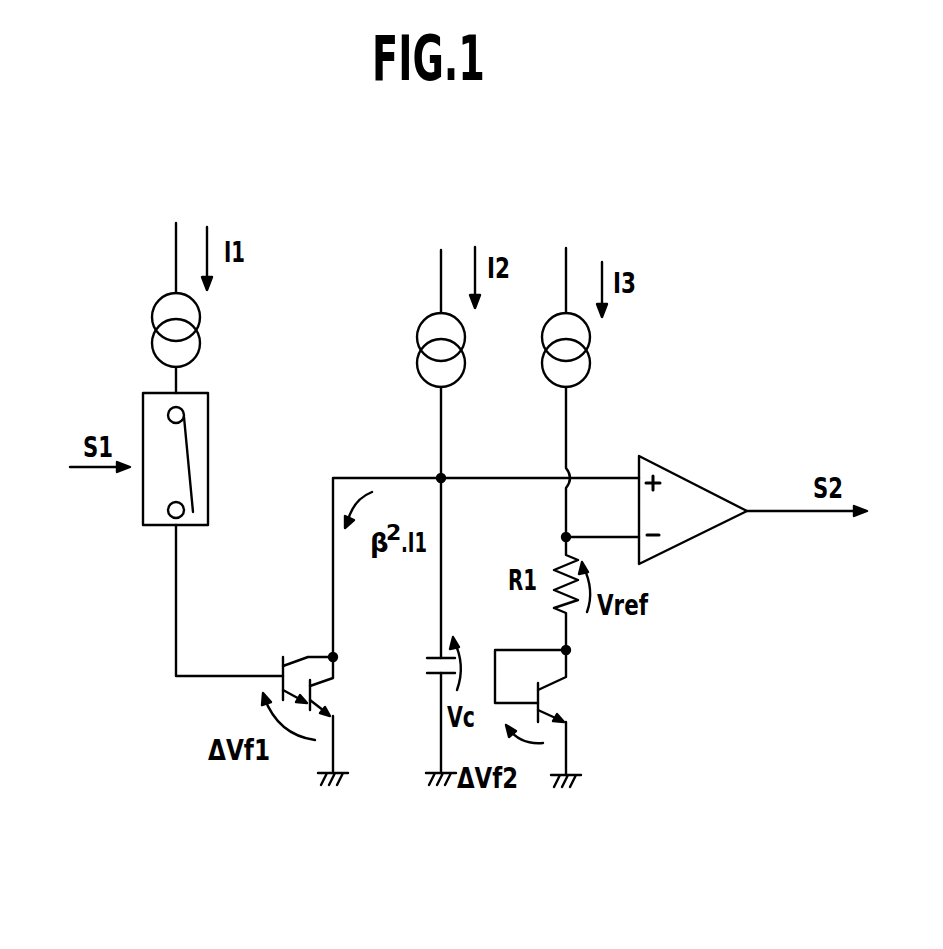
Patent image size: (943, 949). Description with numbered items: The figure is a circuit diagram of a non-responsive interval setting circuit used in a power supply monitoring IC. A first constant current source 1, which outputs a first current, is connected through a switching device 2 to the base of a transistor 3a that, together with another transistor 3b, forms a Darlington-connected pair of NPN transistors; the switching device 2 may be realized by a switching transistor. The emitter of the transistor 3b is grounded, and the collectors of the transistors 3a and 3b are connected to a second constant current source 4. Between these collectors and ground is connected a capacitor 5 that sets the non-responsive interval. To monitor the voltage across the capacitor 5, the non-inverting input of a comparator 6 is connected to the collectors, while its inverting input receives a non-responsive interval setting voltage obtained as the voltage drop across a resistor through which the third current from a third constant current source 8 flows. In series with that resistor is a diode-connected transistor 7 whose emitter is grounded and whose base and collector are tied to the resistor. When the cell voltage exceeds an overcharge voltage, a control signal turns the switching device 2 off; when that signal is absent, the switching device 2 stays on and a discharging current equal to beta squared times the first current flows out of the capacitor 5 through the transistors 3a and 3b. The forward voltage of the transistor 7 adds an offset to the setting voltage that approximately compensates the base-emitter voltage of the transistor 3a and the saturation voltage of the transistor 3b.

The constant current source 1 is at (152, 310).
The switching device 2 is at (208, 438).
The transistor 3a is at (278, 652).
The transistor 3b is at (340, 700).
The constant current source 4 is at (438, 313).
The capacitor 5 is at (423, 673).
The comparator 6 is at (688, 481).
The diode-connected transistor 7 is at (573, 710).
The constant current source 8 is at (588, 372).